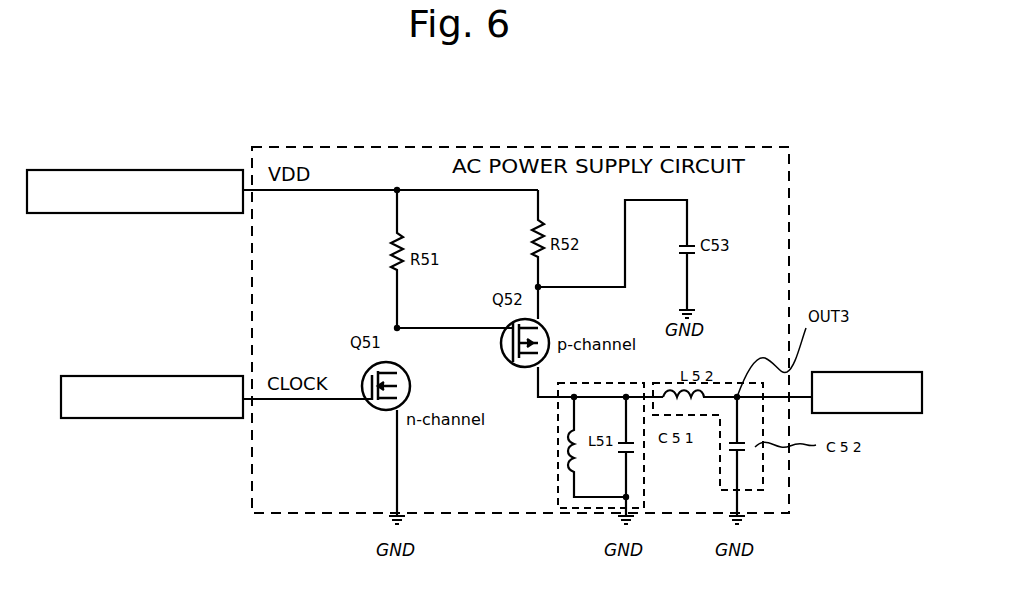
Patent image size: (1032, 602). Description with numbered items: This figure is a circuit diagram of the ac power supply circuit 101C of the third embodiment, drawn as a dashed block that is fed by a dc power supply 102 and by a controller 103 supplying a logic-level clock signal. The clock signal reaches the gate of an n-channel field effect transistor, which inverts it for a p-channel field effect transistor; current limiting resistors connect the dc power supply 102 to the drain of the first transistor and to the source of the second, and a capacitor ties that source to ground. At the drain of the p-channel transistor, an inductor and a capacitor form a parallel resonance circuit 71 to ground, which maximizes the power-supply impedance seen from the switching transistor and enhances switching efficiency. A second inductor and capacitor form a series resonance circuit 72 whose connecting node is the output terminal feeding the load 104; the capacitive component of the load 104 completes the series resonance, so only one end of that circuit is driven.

The ac power supply circuit 101C is at (588, 147).
The dc power supply 102 is at (167, 170).
The controller 103 is at (190, 376).
The load 104 is at (838, 372).
The parallel resonance circuit 71 is at (557, 418).
The series resonance circuit 72 is at (722, 446).